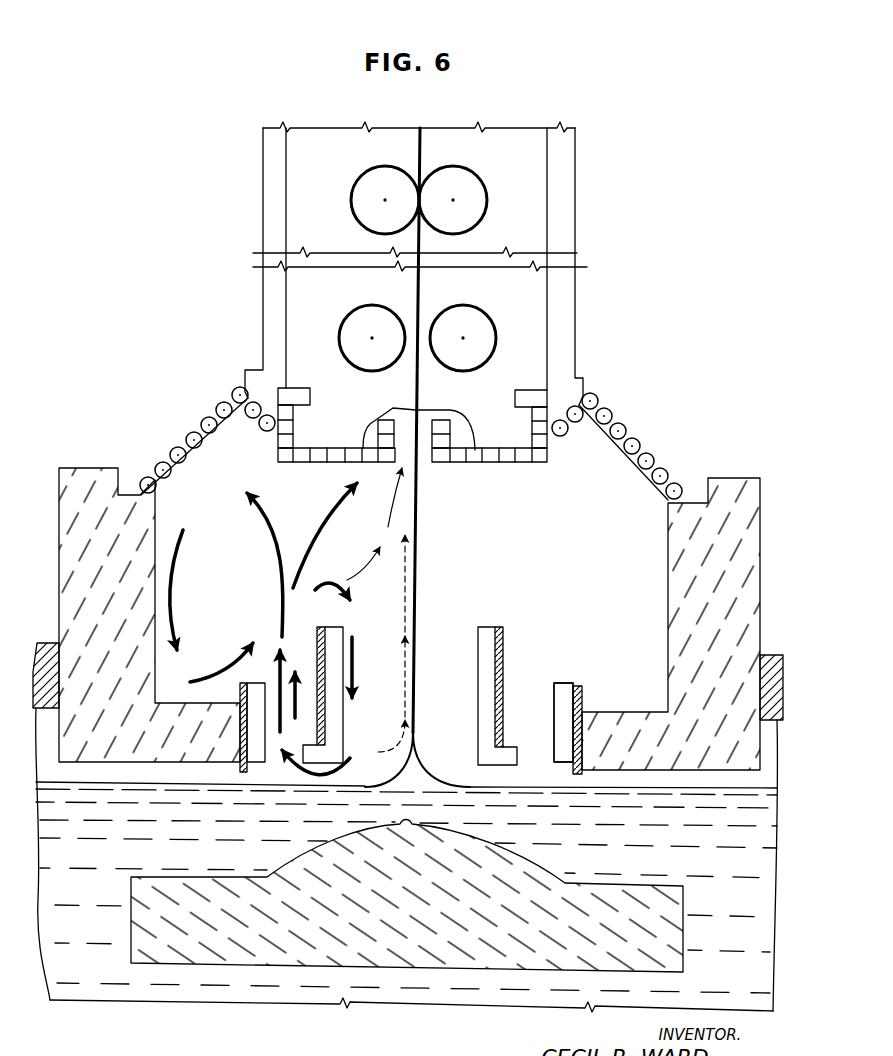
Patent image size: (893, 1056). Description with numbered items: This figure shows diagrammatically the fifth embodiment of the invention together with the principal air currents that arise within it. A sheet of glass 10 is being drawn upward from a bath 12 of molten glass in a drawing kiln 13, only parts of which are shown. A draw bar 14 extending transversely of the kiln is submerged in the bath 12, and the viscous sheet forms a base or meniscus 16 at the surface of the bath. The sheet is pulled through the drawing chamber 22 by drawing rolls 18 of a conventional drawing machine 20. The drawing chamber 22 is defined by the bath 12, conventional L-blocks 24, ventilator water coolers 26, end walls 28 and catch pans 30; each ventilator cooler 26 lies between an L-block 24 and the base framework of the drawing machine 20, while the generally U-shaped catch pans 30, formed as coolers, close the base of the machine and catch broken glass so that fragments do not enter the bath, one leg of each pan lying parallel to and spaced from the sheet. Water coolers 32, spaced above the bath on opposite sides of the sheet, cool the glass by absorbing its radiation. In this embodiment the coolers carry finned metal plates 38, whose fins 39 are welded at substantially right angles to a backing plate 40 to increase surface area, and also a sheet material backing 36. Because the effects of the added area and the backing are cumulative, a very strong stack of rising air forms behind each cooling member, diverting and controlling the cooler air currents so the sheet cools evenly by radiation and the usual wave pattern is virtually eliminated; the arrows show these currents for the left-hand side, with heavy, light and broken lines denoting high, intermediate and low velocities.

The sheet of glass 10 is at (415, 497).
The bath of molten glass 12 is at (492, 787).
The drawing kiln 13 is at (153, 455).
The draw bar 14 is at (507, 945).
The base or meniscus 16 is at (419, 760).
The drawing rolls 18 is at (440, 310).
The drawing machine 20 is at (577, 250).
The drawing chamber 22 is at (598, 460).
The L-blocks 24 is at (59, 575).
The ventilator water coolers 26 is at (203, 415).
The end walls 28 is at (487, 558).
The catch pans 30 is at (393, 408).
The water coolers 32 is at (336, 627).
The sheet material backing 36 is at (317, 627).
The finned plates 38 is at (240, 697).
The fins 39 is at (554, 722).
The backing plate 40 is at (247, 683).